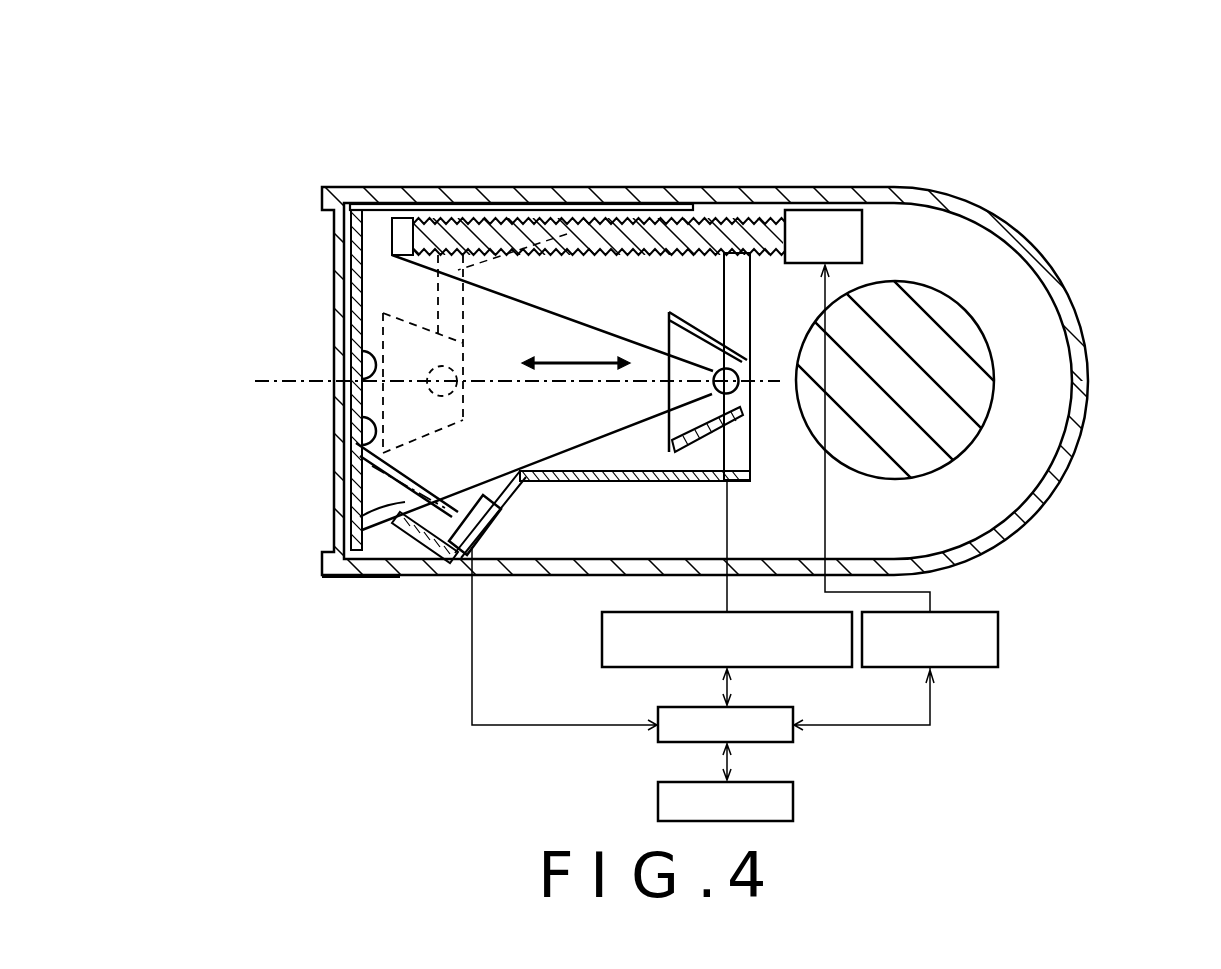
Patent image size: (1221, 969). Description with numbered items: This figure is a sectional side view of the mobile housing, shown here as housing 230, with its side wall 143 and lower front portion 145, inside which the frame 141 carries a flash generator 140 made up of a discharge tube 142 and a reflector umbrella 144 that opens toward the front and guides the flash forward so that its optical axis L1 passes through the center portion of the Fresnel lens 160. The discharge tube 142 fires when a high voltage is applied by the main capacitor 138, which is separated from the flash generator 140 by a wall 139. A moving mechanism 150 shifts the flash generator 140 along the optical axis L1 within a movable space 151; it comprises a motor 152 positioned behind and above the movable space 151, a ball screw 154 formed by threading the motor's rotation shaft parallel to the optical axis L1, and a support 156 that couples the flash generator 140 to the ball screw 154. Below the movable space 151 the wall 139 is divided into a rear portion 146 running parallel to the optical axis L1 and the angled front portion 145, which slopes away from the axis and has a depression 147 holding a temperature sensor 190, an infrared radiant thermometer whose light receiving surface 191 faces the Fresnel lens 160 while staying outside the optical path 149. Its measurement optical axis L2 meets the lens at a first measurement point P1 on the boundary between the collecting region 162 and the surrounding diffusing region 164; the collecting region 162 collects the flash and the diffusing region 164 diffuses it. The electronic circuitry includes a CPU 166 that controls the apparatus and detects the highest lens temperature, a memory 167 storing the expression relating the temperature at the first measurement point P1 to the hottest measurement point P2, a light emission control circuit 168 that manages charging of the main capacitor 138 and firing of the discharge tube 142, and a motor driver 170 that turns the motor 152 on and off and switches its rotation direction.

The housing 230 is at (958, 190).
The side wall 143 is at (333, 232).
The front portion 145 is at (380, 578).
The frame 141 is at (458, 204).
The moving mechanism 150 is at (540, 101).
The ball screw 154 is at (498, 232).
The support 156 is at (667, 213).
The motor 152 is at (825, 210).
The main capacitor 138 is at (945, 345).
The wall 139 is at (731, 412).
The flash generator 140 is at (528, 483).
The rear portion 146 is at (689, 458).
The reflector umbrella 144 is at (667, 313).
The discharge tube 142 is at (714, 389).
The movable space 151 is at (572, 350).
The optical path 149 is at (540, 448).
The depression 147 is at (503, 580).
The temperature sensor 190 is at (440, 580).
The light receiving surface 191 is at (350, 535).
The Fresnel lens 160 is at (227, 423).
The collecting region 162 is at (335, 433).
The diffusing region 164 is at (335, 463).
The optical axis L1 is at (263, 380).
The measurement optical axis L2 is at (335, 507).
The first measurement point P1 is at (348, 415).
The measurement point P2 is at (348, 348).
The light emission control circuit 168 is at (738, 612).
The motor driver 170 is at (998, 630).
The CPU 166 is at (750, 707).
The memory 167 is at (750, 782).